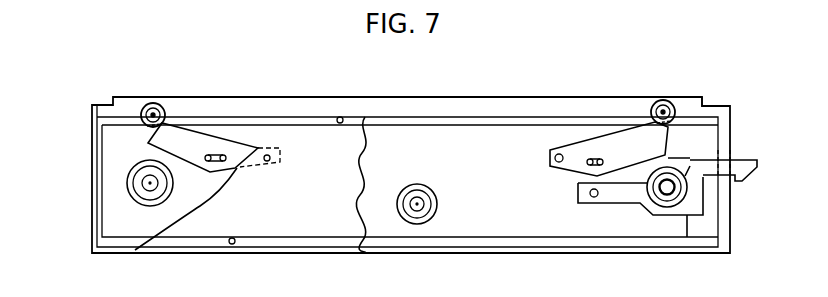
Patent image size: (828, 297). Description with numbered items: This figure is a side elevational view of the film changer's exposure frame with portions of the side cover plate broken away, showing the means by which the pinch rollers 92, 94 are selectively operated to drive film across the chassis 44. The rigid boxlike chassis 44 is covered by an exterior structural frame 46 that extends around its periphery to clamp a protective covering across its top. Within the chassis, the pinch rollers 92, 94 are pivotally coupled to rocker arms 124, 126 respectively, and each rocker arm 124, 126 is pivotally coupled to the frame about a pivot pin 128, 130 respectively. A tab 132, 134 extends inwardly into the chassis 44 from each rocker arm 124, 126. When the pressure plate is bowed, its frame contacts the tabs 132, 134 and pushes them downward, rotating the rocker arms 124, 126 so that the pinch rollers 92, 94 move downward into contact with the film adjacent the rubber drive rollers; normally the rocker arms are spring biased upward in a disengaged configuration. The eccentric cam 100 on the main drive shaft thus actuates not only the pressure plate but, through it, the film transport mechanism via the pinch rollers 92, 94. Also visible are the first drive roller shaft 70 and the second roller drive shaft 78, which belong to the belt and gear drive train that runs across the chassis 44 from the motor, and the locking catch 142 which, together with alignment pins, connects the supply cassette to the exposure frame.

The chassis 44 is at (93, 170).
The exterior structural frame 46 is at (688, 108).
The first drive roller shaft 70 is at (672, 187).
The second roller drive shaft 78 is at (150, 185).
The pinch roller 92 is at (661, 100).
The pinch roller 94 is at (153, 98).
The eccentric cam 100 is at (417, 206).
The rocker arm 124 is at (598, 147).
The rocker arm 126 is at (182, 143).
The pivot pin 128 is at (557, 152).
The pivot pin 130 is at (268, 156).
The tab 132 is at (602, 159).
The tab 134 is at (217, 157).
The locking catch 142 is at (745, 160).